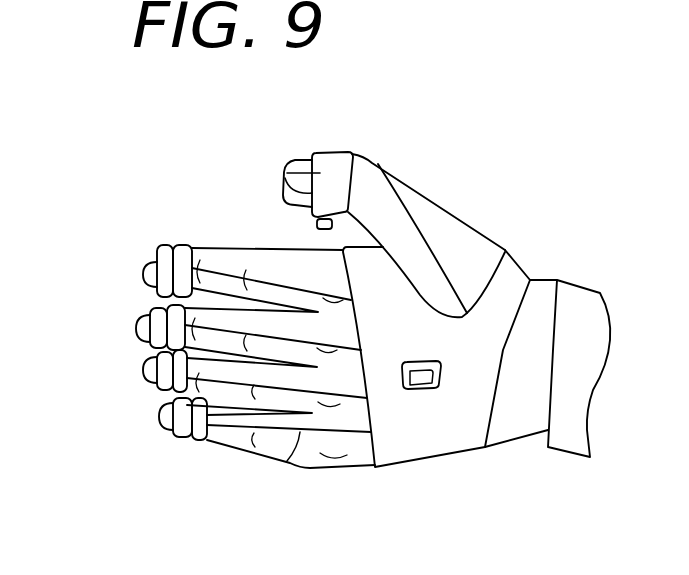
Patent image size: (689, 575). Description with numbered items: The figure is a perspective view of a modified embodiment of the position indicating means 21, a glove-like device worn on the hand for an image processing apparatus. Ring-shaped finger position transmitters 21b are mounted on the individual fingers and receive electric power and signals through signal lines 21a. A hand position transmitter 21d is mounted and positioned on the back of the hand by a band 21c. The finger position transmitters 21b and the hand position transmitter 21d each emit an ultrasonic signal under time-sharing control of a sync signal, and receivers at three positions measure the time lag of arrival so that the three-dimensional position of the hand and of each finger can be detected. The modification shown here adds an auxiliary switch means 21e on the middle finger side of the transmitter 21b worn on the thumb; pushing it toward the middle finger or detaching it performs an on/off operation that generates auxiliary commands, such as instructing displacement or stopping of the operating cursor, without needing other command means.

The position indicating means 21 is at (75, 490).
The signal lines 21a is at (283, 461).
The finger position transmitters 21b is at (286, 170).
The band 21c is at (514, 261).
The hand position transmitter 21d is at (420, 388).
The auxiliary switch means 21e is at (317, 226).